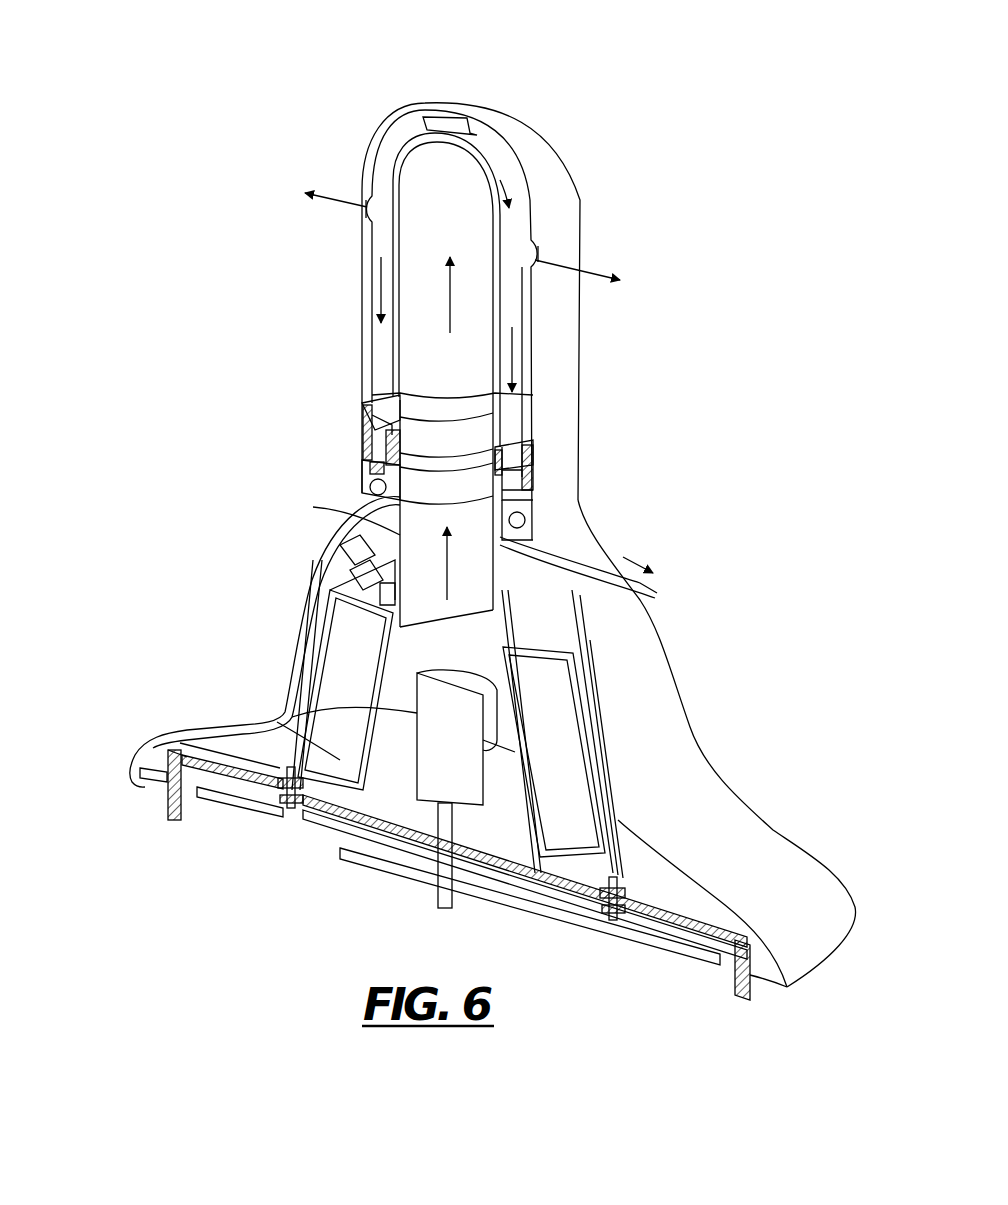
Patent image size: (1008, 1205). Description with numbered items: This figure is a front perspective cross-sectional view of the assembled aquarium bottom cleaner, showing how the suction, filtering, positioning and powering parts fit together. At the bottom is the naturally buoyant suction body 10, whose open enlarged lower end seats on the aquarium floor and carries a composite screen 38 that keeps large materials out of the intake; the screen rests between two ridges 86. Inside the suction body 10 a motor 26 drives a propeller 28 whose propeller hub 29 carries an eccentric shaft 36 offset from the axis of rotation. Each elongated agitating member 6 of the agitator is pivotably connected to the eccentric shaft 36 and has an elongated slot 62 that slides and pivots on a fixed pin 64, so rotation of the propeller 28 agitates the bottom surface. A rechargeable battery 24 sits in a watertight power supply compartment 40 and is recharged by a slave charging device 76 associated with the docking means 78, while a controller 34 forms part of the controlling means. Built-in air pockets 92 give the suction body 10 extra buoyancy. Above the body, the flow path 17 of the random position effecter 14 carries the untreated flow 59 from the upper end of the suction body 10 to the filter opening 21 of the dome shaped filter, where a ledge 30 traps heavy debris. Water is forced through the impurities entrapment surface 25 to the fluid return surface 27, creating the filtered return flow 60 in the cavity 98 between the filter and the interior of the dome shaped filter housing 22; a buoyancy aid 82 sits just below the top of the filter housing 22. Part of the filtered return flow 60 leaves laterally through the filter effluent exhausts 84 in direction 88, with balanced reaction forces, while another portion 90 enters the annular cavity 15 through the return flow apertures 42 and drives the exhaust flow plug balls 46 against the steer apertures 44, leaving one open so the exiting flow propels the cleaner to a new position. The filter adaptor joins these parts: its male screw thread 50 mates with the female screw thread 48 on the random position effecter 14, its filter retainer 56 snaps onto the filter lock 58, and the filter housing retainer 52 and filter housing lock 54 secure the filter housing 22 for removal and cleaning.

The elongated agitating member 6 is at (175, 812).
The suction body 10 is at (790, 860).
The random position effecter 14 is at (540, 482).
The annular cavity 15 is at (372, 472).
The flow path 17 is at (645, 595).
The filter opening 21 is at (447, 433).
The filter housing 22 is at (500, 113).
The rechargeable battery 24 is at (340, 630).
The impurities entrapment surface of filter 25 is at (450, 302).
The motor 26 is at (400, 713).
The fluid return surface of filter 27 is at (470, 273).
The propeller 28 is at (385, 840).
The propeller hub 29 is at (270, 735).
The ledge 30 is at (495, 410).
The controller 34 is at (350, 570).
The eccentric shaft 36 is at (440, 880).
The composite screen 38 is at (520, 905).
The power supply compartment 40 is at (583, 673).
The return flow aperture 42 is at (372, 440).
The steer aperture 44 is at (370, 487).
The exhaust flow plug ball 46 is at (525, 520).
The female screw thread 48 is at (365, 455).
The male screw thread 50 is at (530, 490).
The filter housing retainer 52 is at (535, 465).
The filter housing lock 54 is at (505, 445).
The filter retainer 56 is at (362, 408).
The filter lock 58 is at (418, 413).
The untreated flow 59 is at (510, 335).
The filtered return flow 60 is at (505, 190).
The elongated slot 62 is at (285, 790).
The pin 64 is at (292, 808).
The slave charging device 76 is at (380, 600).
The docking means 78 is at (340, 555).
The buoyancy aid 82 is at (445, 118).
The filter effluent exhaust 84 is at (365, 218).
The ridge 86 is at (157, 745).
The portion of filtered return flow through filter effluent exhaust 88 is at (343, 195).
The portion of filtered return flow through steer aperture 90 is at (628, 558).
The air pocket 92 is at (618, 820).
The cavity defined by fluid return surface of filter and interior surface of filter 98 is at (390, 140).